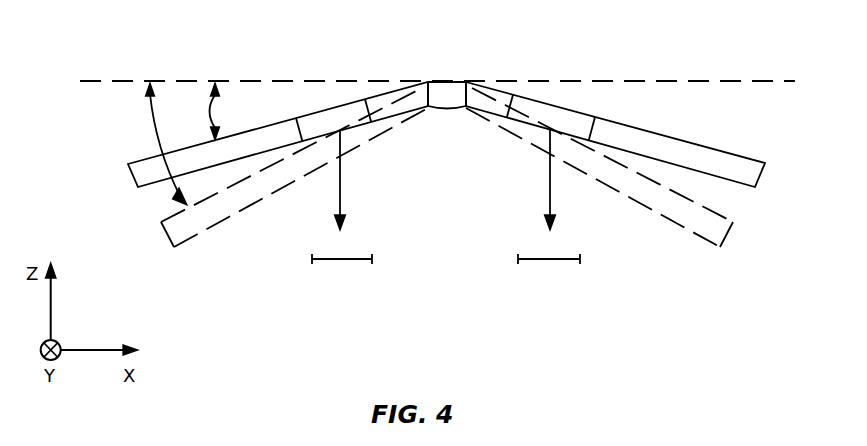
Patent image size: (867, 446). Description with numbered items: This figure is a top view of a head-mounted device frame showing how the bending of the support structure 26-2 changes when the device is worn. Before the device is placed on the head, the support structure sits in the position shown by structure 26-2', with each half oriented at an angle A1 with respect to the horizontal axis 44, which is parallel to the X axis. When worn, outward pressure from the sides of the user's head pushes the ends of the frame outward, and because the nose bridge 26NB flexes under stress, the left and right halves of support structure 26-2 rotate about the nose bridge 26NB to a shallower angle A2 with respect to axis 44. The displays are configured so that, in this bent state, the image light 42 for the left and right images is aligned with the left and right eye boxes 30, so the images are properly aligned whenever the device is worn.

The horizontal axis 44 is at (712, 81).
The nose bridge 26NB is at (447, 90).
The support structure 26-2 is at (401, 141).
The structure 26-2' is at (447, 196).
The image light 42 is at (340, 178).
The eye boxes 30 is at (518, 259).
The angle A1 is at (150, 144).
The angle A2 is at (200, 111).